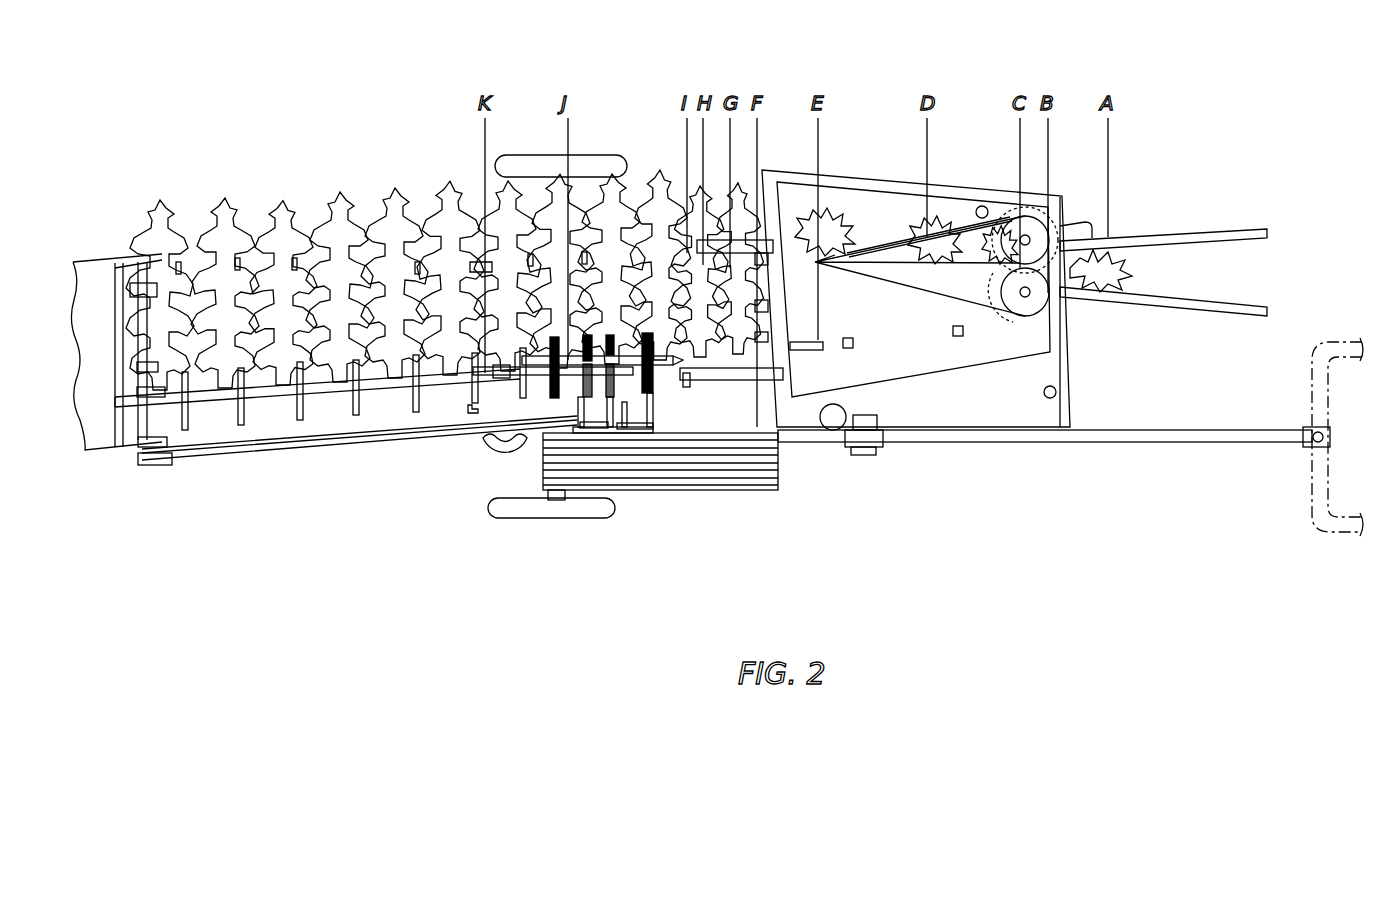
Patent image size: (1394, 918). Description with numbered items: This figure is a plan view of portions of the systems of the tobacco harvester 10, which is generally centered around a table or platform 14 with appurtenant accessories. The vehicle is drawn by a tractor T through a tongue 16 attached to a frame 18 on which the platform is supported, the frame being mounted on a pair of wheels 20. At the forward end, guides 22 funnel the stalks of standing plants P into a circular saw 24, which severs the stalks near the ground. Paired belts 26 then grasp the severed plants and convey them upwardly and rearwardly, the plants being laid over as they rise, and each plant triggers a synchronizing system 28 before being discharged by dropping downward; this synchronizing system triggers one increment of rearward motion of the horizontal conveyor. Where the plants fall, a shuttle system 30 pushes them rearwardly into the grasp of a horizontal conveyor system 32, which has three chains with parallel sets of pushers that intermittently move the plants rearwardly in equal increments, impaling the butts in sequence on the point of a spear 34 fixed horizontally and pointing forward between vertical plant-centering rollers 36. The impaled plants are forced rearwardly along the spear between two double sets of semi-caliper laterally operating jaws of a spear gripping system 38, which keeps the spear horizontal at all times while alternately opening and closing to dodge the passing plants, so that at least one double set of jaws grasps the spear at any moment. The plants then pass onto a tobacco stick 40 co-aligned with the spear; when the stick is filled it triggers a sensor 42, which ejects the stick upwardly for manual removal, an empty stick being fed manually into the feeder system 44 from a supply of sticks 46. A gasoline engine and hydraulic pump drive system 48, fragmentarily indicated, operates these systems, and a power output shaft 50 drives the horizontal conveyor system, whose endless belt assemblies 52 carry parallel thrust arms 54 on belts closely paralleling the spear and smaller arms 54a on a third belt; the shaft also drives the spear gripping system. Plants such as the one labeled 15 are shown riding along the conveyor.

The tobacco harvester 10 is at (761, 66).
The table or platform 14 is at (260, 250).
The tobacco plant 15 is at (353, 237).
The tongue 16 is at (1172, 443).
The frame 18 is at (805, 443).
The wheels 20 is at (610, 518).
The guides 22 is at (1202, 305).
The circular saw 24 is at (998, 295).
The paired belts 26 is at (882, 316).
The synchronizing system 28 is at (808, 350).
The shuttle system 30 is at (761, 354).
The horizontal conveyor system 32 is at (636, 335).
The spear 34 is at (619, 381).
The plant-centering rollers 36 is at (712, 352).
The spear gripping system 38 is at (583, 400).
The tobacco stick 40 is at (578, 413).
The sensor 42 is at (172, 410).
The feeder system 44 is at (474, 414).
The supply of sticks 46 is at (700, 490).
The hydraulic pump drive system 48 is at (876, 461).
The power output shaft 50 is at (140, 332).
The endless belt assemblies 52 is at (138, 367).
The thrust arms 54 is at (425, 405).
The smaller arms 54a is at (480, 268).
The standing plants P is at (1130, 275).
The tractor T is at (1350, 340).